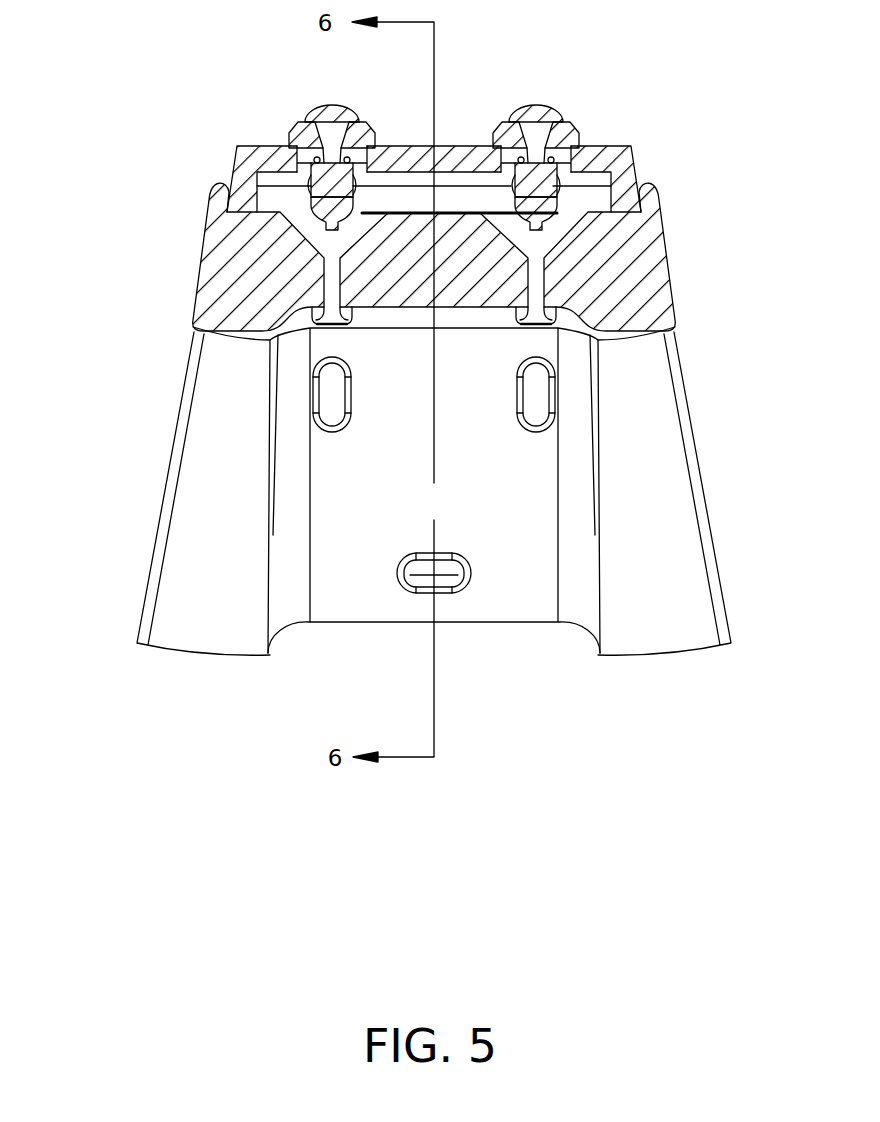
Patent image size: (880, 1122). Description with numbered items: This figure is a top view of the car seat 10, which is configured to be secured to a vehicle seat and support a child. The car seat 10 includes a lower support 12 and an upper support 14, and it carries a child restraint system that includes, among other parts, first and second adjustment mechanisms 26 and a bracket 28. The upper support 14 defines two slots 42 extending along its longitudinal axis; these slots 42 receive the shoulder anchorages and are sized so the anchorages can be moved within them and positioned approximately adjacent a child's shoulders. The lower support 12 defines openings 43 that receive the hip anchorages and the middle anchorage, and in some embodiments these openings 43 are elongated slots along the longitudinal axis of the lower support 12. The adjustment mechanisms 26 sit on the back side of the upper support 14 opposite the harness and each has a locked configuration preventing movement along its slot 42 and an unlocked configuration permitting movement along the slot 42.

The car seat 10 is at (196, 140).
The lower support 12 is at (328, 608).
The upper support 14 is at (668, 262).
The adjustment mechanism 26 is at (293, 121).
The bracket 28 is at (580, 172).
The slot 42 is at (526, 259).
The opening 43 is at (313, 395).